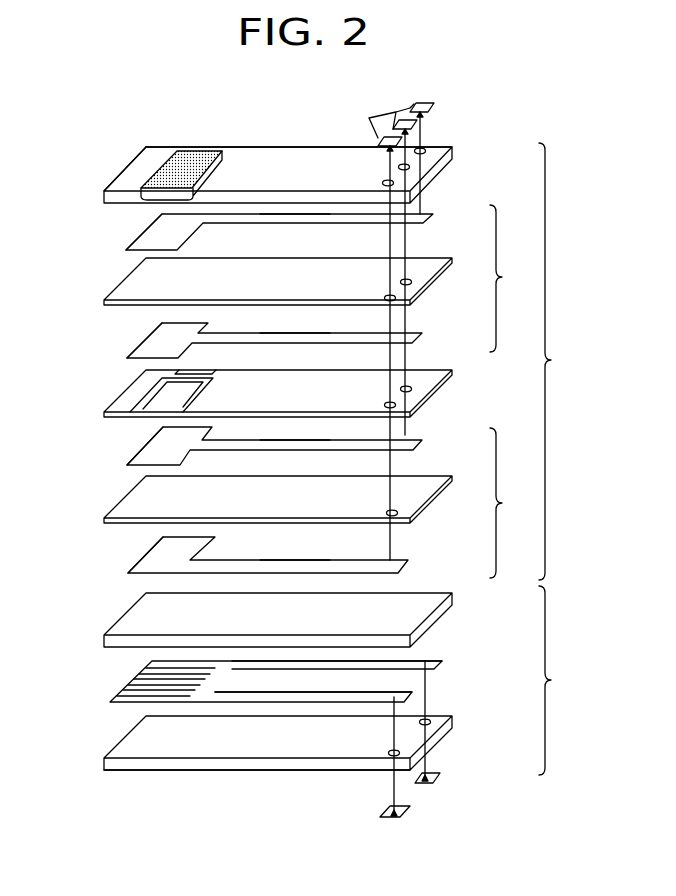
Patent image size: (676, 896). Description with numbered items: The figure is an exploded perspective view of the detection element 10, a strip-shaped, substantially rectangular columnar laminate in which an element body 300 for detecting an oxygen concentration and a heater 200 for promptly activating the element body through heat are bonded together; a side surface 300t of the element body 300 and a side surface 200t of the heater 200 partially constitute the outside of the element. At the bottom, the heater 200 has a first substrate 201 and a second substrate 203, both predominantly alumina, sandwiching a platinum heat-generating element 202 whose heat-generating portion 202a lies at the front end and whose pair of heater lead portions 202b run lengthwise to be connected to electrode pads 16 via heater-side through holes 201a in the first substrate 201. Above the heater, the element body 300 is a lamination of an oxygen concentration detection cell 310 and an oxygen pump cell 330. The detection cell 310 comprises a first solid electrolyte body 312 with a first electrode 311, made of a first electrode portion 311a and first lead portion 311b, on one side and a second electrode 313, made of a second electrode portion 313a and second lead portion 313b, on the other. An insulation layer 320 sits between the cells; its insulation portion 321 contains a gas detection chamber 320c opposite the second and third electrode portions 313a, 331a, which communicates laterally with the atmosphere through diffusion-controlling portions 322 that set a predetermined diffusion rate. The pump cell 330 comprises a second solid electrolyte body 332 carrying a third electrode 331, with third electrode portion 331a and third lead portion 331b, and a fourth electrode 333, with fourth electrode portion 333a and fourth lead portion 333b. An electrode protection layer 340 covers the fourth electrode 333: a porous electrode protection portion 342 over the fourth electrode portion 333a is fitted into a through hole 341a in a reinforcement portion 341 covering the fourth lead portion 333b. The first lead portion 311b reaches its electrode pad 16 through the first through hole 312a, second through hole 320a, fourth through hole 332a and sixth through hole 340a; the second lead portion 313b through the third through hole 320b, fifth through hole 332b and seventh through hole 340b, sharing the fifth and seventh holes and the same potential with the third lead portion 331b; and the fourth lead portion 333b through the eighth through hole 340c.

The detection element 10 is at (91, 141).
The electrode pads 16 is at (408, 806).
The heater 200 is at (564, 680).
The side surface of heater 200t is at (270, 771).
The first substrate 201 is at (445, 746).
The heater-side through holes 201a is at (432, 720).
The heat-generating element 202 is at (283, 681).
The heat-generating portion 202a is at (130, 686).
The heater lead portions 202b is at (300, 665).
The second substrate 203 is at (436, 621).
The element body 300 is at (564, 361).
The side surface of element body 300t is at (277, 135).
The oxygen concentration detection cell 310 is at (513, 503).
The first electrode 311 is at (428, 568).
The first electrode portion 311a is at (165, 560).
The first lead portion 311b is at (300, 561).
The first solid electrolyte body 312 is at (445, 505).
The first through hole 312a is at (386, 512).
The second electrode 313 is at (432, 448).
The second electrode portion 313a is at (167, 457).
The second lead portion 313b is at (295, 450).
The insulation layer 320 is at (445, 400).
The second through hole 320a is at (385, 405).
The third through hole 320b is at (400, 389).
The gas detection chamber 320c is at (210, 375).
The insulation portion 321 is at (240, 380).
The diffusion-controlling portions 322 is at (140, 410).
The oxygen pump cell 330 is at (513, 278).
The third electrode 331 is at (430, 340).
The third electrode portion 331a is at (163, 344).
The third lead portion 331b is at (298, 343).
The second solid electrolyte body 332 is at (445, 291).
The fourth through hole 332a is at (385, 298).
The fifth through hole 332b is at (400, 282).
The fourth electrode 333 is at (446, 218).
The fourth electrode portion 333a is at (167, 237).
The fourth lead portion 333b is at (293, 223).
The electrode protection layer 340 is at (444, 182).
The sixth through hole 340a is at (382, 182).
The seventh through hole 340b is at (398, 166).
The eighth through hole 340c is at (426, 148).
The reinforcement portion 341 is at (277, 168).
The through hole 341a is at (256, 163).
The porous electrode protection portion 342 is at (192, 162).